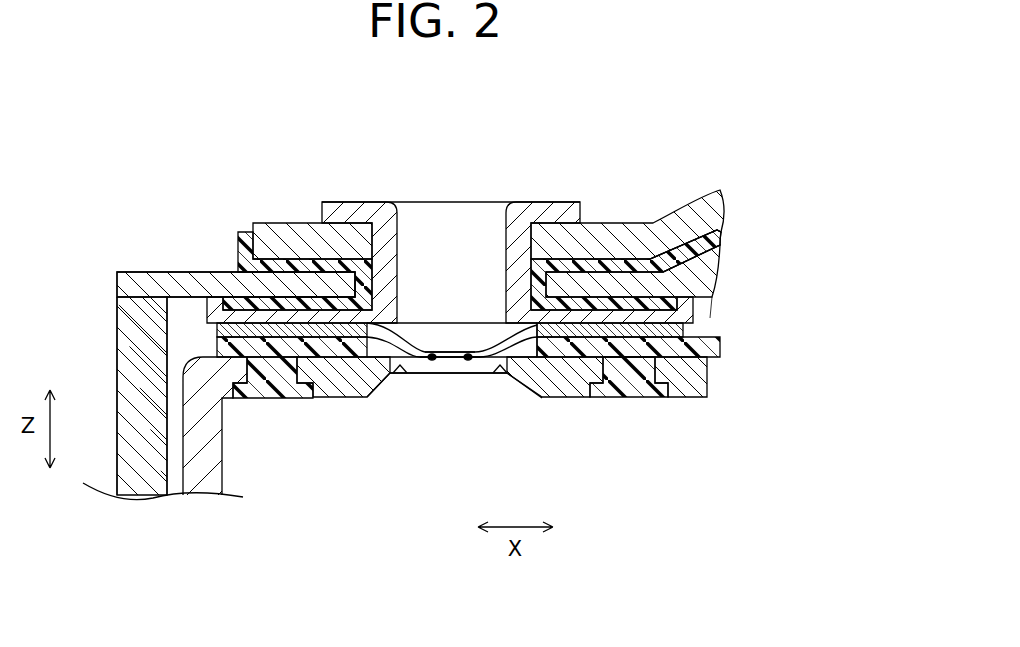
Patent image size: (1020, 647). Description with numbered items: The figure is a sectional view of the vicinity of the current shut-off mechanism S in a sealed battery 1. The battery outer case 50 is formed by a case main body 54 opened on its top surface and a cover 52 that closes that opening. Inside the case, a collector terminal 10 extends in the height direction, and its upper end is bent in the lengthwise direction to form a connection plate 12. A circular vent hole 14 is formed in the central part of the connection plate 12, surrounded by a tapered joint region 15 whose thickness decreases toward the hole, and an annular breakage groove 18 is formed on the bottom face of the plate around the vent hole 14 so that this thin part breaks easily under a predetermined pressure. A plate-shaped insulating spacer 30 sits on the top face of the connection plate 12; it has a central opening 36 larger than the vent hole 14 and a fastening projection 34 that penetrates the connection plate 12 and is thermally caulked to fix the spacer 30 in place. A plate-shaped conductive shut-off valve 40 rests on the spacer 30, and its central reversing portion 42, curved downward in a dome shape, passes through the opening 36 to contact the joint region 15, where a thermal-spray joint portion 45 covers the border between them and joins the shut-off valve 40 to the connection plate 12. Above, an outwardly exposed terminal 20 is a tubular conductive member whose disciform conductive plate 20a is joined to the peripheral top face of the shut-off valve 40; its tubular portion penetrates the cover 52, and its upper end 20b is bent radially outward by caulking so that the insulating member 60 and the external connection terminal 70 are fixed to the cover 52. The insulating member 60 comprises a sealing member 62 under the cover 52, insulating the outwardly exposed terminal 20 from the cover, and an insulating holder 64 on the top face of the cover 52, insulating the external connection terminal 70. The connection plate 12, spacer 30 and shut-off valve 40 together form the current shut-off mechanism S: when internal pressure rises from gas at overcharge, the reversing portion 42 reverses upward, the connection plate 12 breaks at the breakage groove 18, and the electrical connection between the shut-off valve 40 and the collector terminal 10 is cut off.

The sealed battery 1 is at (753, 90).
The collector terminal 10 is at (213, 479).
The connection plate 12 is at (712, 388).
The vent hole 14 is at (444, 375).
The joint region 15 is at (402, 374).
The breakage groove 18 is at (430, 363).
The outwardly exposed terminal 20 is at (398, 240).
The conductive plate 20a is at (225, 300).
The upper end 20b is at (347, 203).
The spacer 30 is at (720, 349).
The fastening projection 34 is at (272, 396).
The opening 36 is at (374, 386).
The shut-off valve 40 is at (500, 320).
The reversing portion 42 is at (440, 347).
The thermal-spray joint portion 45 is at (455, 363).
The battery outer case 50 is at (143, 268).
The cover 52 is at (182, 280).
The case main body 54 is at (122, 347).
The insulating member 60 is at (691, 271).
The sealing member 62 is at (790, 225).
The insulating holder 64 is at (728, 243).
The external connection terminal 70 is at (668, 210).
The current shut-off mechanism S is at (790, 317).